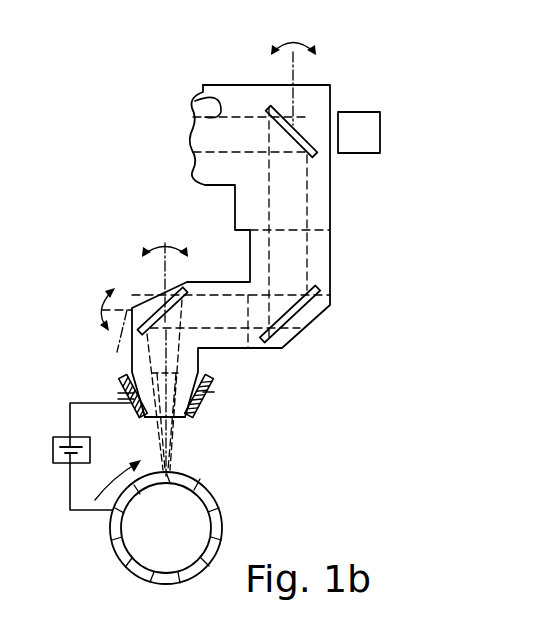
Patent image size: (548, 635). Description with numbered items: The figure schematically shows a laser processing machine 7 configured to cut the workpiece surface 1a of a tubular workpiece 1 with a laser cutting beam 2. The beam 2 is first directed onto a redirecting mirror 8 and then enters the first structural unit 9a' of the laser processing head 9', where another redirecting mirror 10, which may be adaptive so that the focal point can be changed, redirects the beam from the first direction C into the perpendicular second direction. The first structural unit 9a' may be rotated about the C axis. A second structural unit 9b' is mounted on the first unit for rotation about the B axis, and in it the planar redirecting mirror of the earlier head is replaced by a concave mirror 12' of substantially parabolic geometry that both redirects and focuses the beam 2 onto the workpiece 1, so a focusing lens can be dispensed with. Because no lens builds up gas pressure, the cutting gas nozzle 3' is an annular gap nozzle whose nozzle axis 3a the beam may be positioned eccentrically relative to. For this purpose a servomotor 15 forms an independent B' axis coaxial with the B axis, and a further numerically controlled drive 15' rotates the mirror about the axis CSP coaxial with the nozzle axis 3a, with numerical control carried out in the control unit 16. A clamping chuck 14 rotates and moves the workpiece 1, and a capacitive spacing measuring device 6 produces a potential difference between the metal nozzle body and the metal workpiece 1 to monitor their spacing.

The tubular workpiece 1 is at (222, 482).
The workpiece surface 1a is at (110, 532).
The laser cutting beam 2 is at (200, 103).
The cutting gas nozzle 3' is at (220, 395).
The nozzle axis 3a is at (189, 418).
The capacitive spacing measuring device 6 is at (53, 440).
The laser processing machine 7 is at (148, 136).
The redirecting mirror 8 is at (298, 130).
The laser processing head 9' is at (330, 301).
The first structural unit 9a' is at (338, 225).
The second structural unit 9b' is at (221, 292).
The redirecting mirror 10 is at (292, 330).
The concave mirror 12' is at (136, 298).
The clamping chuck 14 is at (116, 477).
The servomotor 15 is at (125, 386).
The numerically controlled drive 15' is at (132, 274).
The control unit 16 is at (353, 127).
The first direction (C axis) C is at (293, 35).
The CSP axis CSP is at (163, 238).
The B' axis B' is at (76, 309).